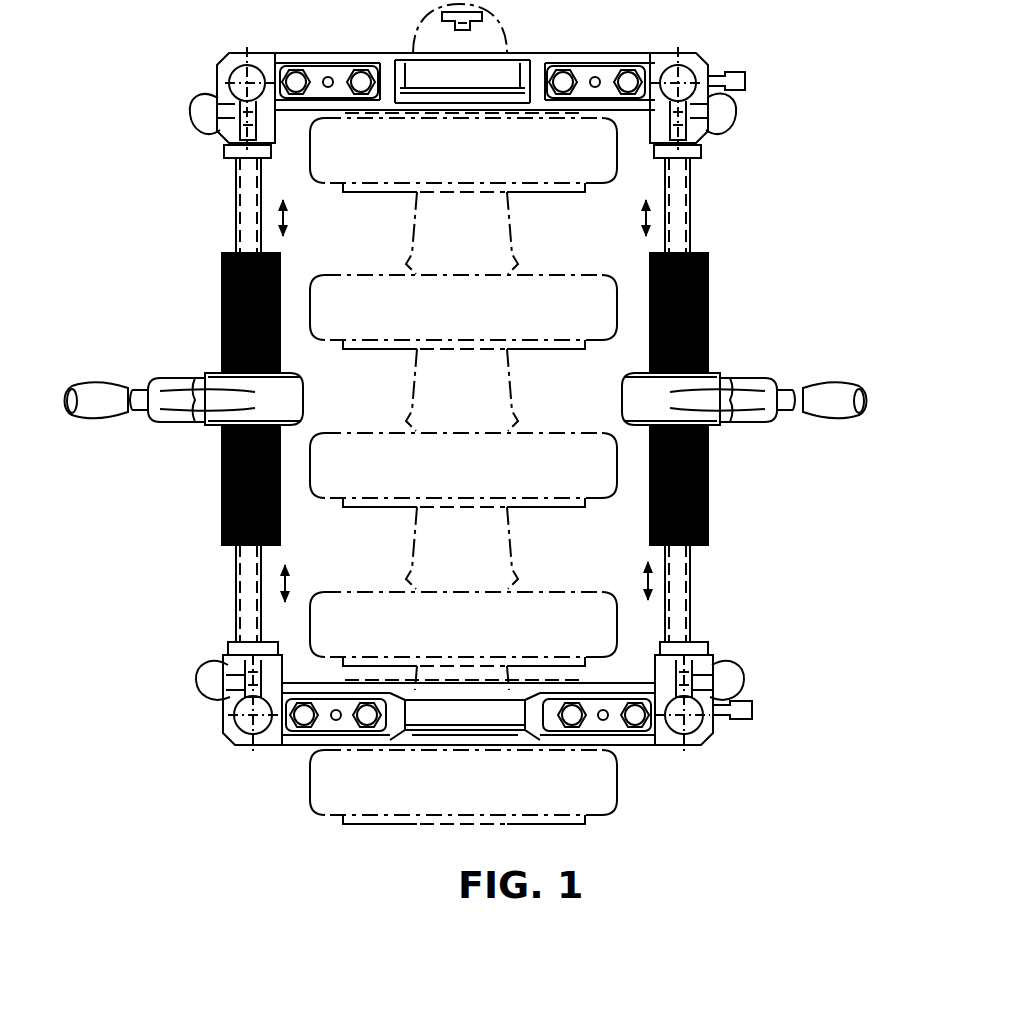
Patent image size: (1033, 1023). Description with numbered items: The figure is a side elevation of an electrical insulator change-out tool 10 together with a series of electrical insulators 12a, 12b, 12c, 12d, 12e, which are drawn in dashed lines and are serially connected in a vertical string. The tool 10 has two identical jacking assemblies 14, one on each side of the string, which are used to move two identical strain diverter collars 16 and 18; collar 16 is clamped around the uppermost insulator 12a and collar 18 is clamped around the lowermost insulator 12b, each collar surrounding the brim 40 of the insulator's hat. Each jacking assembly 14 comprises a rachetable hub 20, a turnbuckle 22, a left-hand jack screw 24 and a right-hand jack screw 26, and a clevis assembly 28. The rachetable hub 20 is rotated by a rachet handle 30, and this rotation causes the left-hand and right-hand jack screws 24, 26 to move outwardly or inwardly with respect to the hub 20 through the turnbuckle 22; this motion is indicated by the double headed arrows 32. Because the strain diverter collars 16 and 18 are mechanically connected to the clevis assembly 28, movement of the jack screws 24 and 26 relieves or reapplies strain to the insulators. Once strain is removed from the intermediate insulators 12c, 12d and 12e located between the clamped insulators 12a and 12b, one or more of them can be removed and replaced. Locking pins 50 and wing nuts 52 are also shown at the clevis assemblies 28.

The insulator change-out tool 10 is at (791, 234).
The electrical insulator 12a is at (488, 160).
The electrical insulator 12b is at (496, 795).
The electrical insulator 12c is at (488, 317).
The electrical insulator 12d is at (488, 475).
The electrical insulator 12e is at (488, 635).
The jacking assembly 14 is at (189, 457).
The strain diverter collar 16 is at (601, 52).
The strain diverter collar 18 is at (299, 751).
The rachetable hub 20 is at (712, 387).
The turnbuckle 22 is at (712, 522).
The left-hand jack screw 24 is at (247, 196).
The right-hand jack screw 26 is at (689, 205).
The clevis assembly 28 is at (209, 143).
The rachet handle 30 is at (80, 419).
The double headed arrows 32 is at (289, 218).
The brim 40 is at (519, 265).
The locking pin 50 is at (748, 93).
The wing nut 52 is at (719, 68).